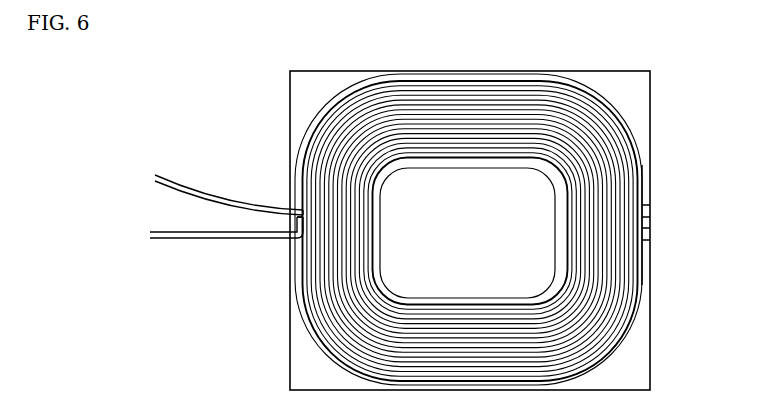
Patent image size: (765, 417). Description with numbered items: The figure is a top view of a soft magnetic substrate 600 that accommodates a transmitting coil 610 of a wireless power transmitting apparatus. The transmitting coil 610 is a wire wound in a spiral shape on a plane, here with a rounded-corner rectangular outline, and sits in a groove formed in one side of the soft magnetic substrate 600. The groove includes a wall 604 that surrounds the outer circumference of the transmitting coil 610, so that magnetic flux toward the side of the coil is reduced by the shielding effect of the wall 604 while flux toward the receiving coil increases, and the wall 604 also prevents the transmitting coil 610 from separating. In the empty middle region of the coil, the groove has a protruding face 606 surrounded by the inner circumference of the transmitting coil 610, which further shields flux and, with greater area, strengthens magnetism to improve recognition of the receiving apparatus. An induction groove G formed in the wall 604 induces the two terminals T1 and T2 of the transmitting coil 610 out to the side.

The soft magnetic substrate 600 is at (640, 94).
The transmitting coil 610 is at (642, 184).
The wall 604 is at (525, 256).
The protruding face 606 is at (642, 303).
The terminal T1 is at (216, 187).
The terminal T2 is at (211, 231).
The induction groove G is at (291, 222).